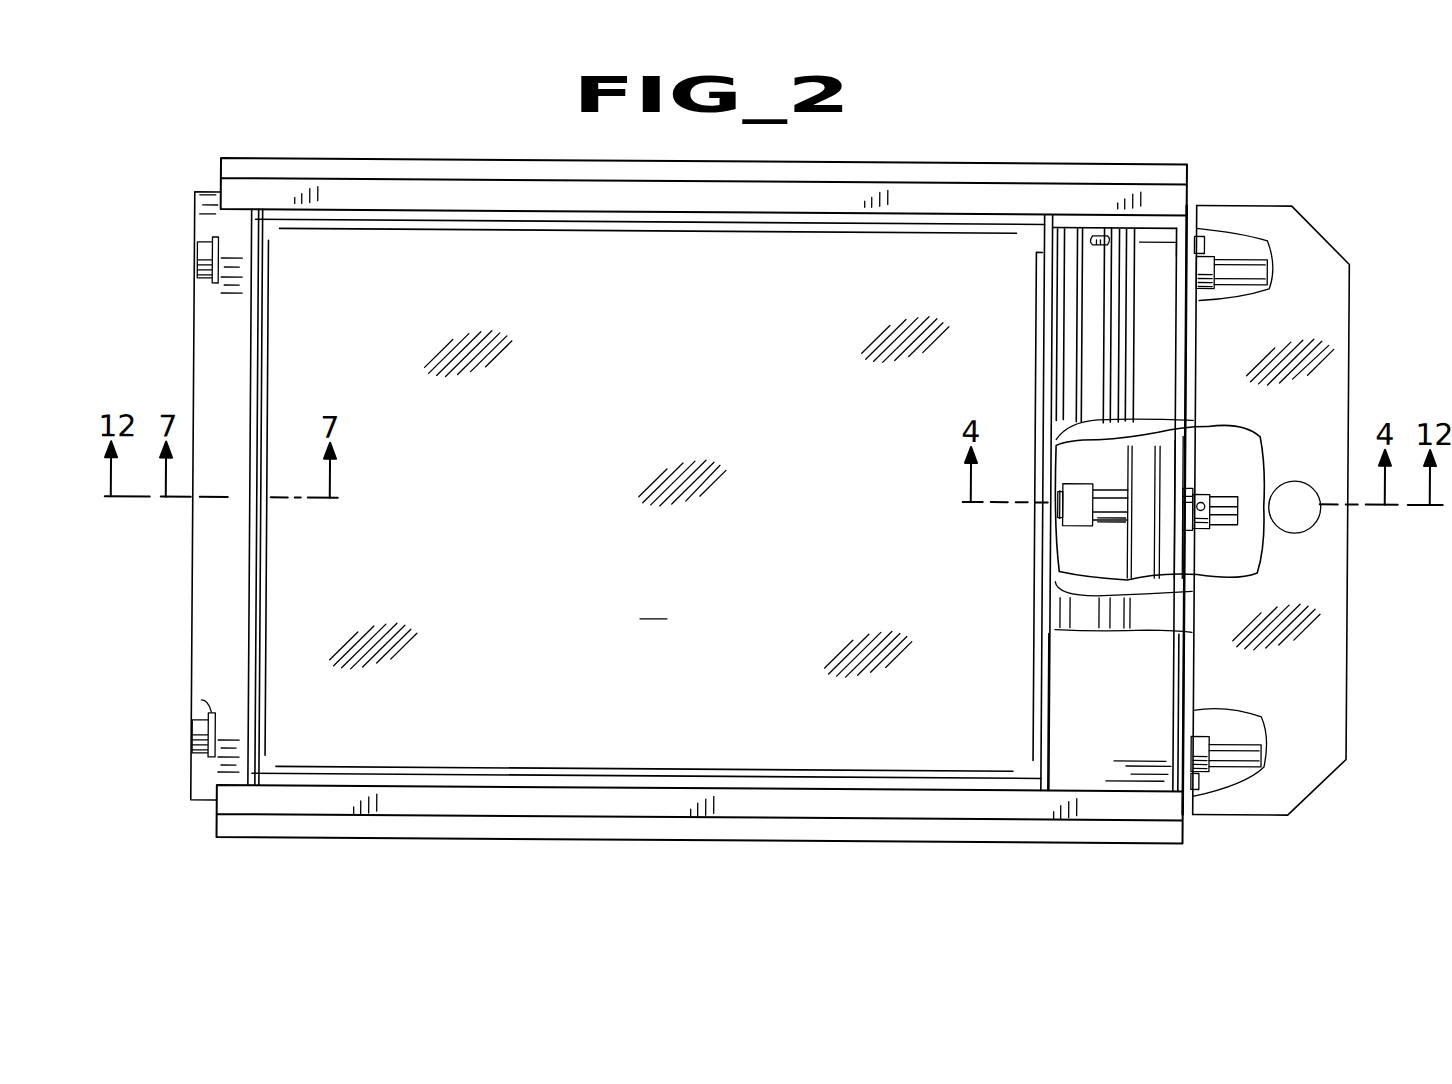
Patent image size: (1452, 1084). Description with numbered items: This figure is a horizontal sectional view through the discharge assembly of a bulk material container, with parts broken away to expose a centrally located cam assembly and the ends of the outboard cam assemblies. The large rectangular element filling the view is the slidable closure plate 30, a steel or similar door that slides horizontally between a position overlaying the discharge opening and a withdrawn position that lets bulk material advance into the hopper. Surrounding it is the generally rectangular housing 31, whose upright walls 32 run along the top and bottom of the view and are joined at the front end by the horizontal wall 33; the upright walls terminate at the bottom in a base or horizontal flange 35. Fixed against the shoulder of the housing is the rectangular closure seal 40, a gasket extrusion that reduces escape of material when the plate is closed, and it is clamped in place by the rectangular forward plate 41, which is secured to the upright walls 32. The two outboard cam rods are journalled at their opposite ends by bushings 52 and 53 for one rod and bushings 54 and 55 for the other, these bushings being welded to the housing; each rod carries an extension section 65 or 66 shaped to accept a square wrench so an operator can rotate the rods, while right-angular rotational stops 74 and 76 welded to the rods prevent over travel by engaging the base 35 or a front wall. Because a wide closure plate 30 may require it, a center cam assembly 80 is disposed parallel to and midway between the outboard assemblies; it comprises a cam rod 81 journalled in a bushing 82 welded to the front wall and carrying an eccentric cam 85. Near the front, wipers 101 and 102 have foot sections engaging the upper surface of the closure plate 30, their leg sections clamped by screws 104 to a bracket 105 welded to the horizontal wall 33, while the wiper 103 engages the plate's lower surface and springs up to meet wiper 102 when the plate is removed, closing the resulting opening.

The closure plate 30 is at (1351, 296).
The housing 31 is at (243, 374).
The upright walls 32 is at (1060, 226).
The horizontal wall 33 is at (1132, 686).
The base or horizontal flange 35 is at (330, 826).
The closure seal 40 is at (1058, 306).
The forward plate 41 is at (1037, 268).
The bushing 52 is at (197, 257).
The bushing 53 is at (1207, 250).
The bushing 54 is at (196, 735).
The bushing 55 is at (1206, 730).
The extension section 65 is at (1258, 252).
The extension section 66 is at (1256, 734).
The rotational stop 74 is at (214, 279).
The rotational stop 76 is at (212, 714).
The center cam assembly 80 is at (1222, 480).
The cam rod 81 is at (1062, 492).
The bushing 82 is at (1190, 482).
The eccentric cam 85 is at (1062, 512).
The wiper 101 is at (1112, 306).
The wiper 102 is at (1183, 326).
The wiper 103 is at (1138, 528).
The screw 104 is at (1200, 236).
The bracket 105 is at (1177, 256).